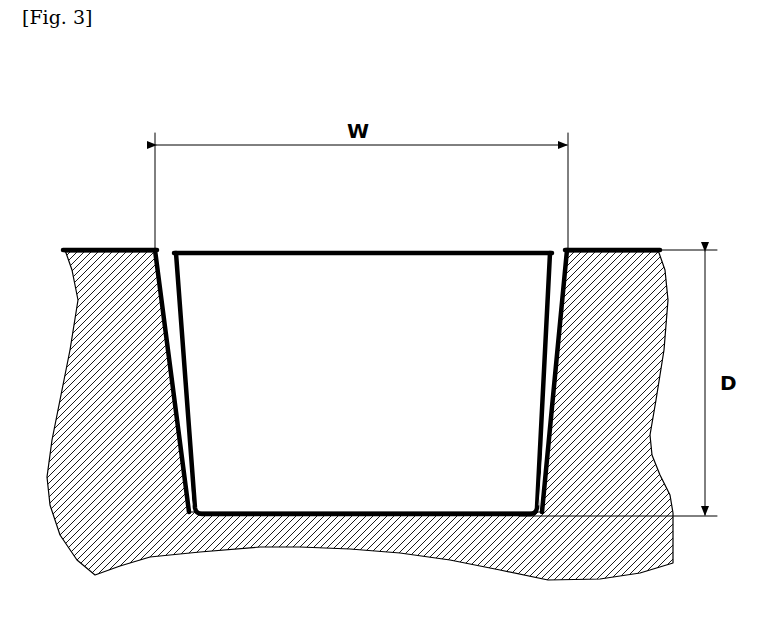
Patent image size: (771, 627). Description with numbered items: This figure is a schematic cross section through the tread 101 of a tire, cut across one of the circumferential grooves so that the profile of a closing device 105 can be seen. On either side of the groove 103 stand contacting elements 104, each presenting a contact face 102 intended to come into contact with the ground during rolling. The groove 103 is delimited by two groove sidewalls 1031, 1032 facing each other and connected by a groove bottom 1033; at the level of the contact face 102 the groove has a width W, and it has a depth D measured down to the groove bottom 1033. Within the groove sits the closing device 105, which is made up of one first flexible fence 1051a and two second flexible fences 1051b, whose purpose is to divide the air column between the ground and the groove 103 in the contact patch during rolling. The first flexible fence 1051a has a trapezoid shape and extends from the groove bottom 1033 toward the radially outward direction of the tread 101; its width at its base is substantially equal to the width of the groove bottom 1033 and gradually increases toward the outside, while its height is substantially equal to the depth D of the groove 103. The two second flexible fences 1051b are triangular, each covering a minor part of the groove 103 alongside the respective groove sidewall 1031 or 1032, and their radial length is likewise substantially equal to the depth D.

The tread 101 is at (605, 143).
The contact face 102 is at (112, 248).
The groove 103 is at (278, 248).
The contacting element 104 is at (83, 247).
The closing device 105 is at (378, 243).
The groove sidewall 1031 is at (162, 302).
The groove sidewall 1032 is at (558, 272).
The groove bottom 1033 is at (270, 509).
The first flexible fence 1051a is at (388, 492).
The second flexible fence 1051b is at (165, 256).